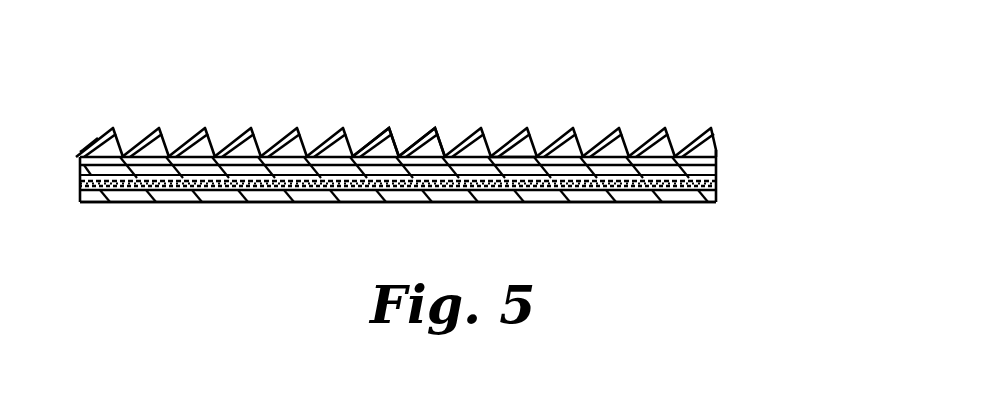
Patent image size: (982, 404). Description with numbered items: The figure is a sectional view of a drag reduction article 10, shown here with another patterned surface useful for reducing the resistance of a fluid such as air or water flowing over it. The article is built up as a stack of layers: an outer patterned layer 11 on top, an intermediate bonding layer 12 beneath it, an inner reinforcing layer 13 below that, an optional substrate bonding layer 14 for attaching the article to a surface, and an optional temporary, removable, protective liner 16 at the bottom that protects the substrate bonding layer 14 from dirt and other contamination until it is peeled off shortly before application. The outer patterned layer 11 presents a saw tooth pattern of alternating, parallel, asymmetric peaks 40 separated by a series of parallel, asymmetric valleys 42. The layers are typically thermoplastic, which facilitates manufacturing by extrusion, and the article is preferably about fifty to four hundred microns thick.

The drag reduction article 10 is at (755, 71).
The outer patterned layer 11 is at (715, 147).
The intermediate bonding layer 12 is at (718, 165).
The inner reinforcing layer 13 is at (718, 177).
The substrate bonding layer 14 is at (82, 185).
The temporary removable protective liner 16 is at (512, 198).
The asymmetric peaks 40 is at (446, 150).
The asymmetric valleys 42 is at (537, 150).